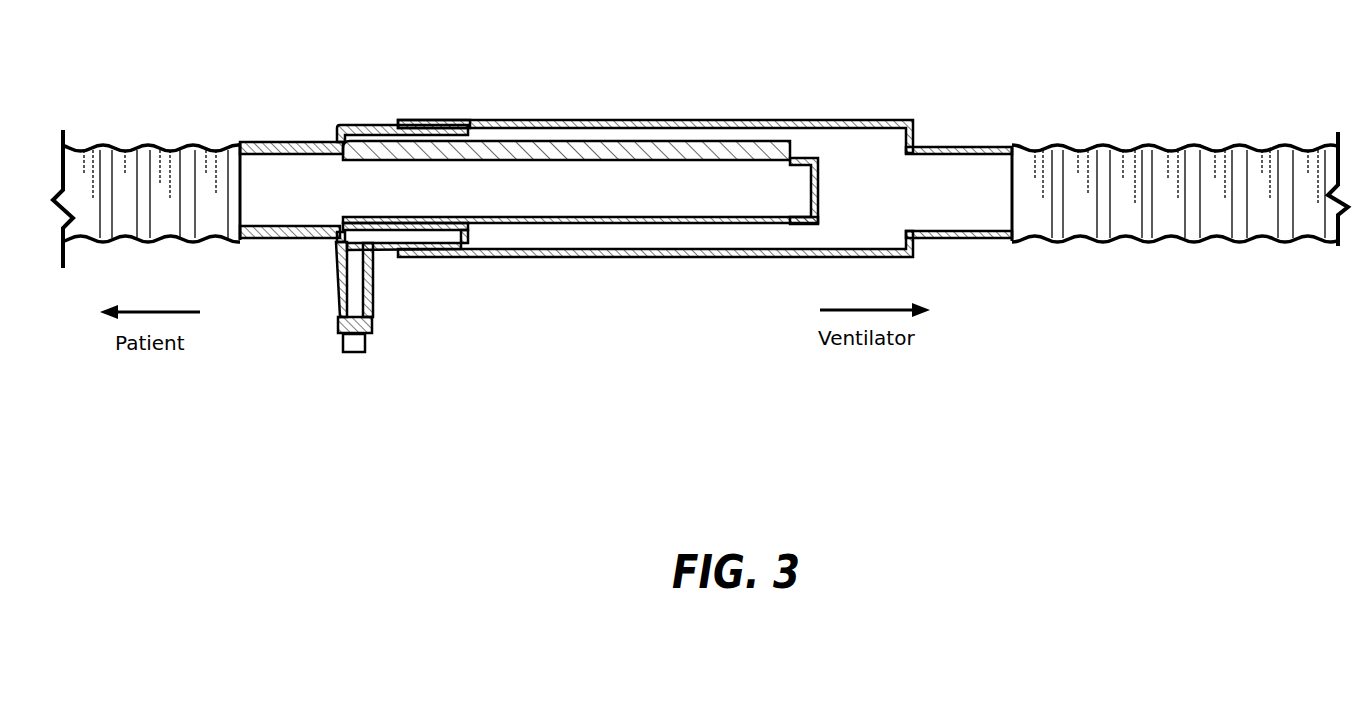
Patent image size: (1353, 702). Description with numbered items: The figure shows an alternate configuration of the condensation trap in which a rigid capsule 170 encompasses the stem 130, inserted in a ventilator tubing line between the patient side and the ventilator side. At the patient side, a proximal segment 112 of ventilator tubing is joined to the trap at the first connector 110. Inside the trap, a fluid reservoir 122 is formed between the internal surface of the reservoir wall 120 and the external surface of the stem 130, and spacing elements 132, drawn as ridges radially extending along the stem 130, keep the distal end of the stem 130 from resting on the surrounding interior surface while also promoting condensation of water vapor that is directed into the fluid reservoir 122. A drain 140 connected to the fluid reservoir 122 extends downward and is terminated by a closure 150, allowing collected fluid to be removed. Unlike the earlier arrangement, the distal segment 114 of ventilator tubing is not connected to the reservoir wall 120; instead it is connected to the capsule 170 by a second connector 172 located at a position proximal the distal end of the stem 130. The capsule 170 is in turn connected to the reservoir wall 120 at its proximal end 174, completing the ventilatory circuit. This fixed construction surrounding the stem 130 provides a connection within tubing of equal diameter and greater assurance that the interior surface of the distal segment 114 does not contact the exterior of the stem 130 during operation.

The first connector 110 is at (322, 142).
The proximal segment 112 is at (178, 147).
The distal segment 114 is at (1097, 147).
The reservoir wall 120 is at (362, 125).
The fluid reservoir 122 is at (436, 240).
The stem 130 is at (808, 160).
The spacing elements 132 is at (715, 141).
The drain 140 is at (360, 322).
The closure 150 is at (356, 353).
The capsule 170 is at (560, 120).
The second connector 172 is at (928, 147).
The proximal end 174 is at (432, 118).